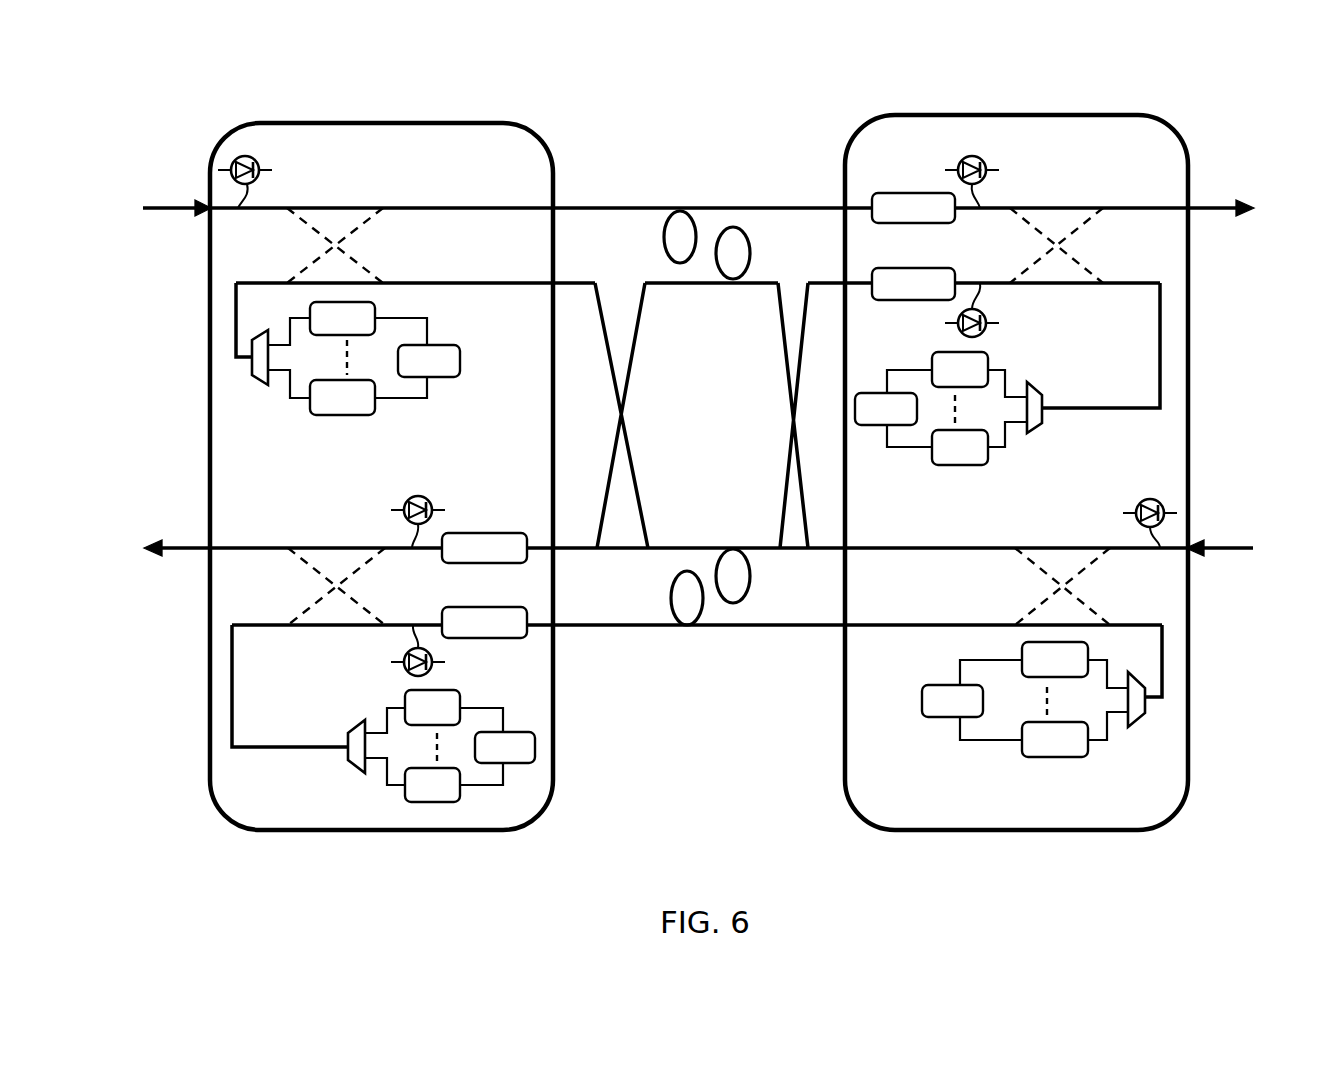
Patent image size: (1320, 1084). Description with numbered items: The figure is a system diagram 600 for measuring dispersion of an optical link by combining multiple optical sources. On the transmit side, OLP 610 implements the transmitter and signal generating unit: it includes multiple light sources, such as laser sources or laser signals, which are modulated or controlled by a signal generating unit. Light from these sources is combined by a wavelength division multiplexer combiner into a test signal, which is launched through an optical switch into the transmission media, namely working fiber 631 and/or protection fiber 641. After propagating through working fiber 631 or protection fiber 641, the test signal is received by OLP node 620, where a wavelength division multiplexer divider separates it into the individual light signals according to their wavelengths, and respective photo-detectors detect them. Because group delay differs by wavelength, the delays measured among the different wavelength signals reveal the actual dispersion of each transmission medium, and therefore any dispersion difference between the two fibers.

The optical line protection system 600 is at (796, 822).
The OLP 610 is at (408, 832).
The OLP node 620 is at (950, 832).
The working fiber 631 is at (612, 208).
The protection fiber 641 is at (762, 550).